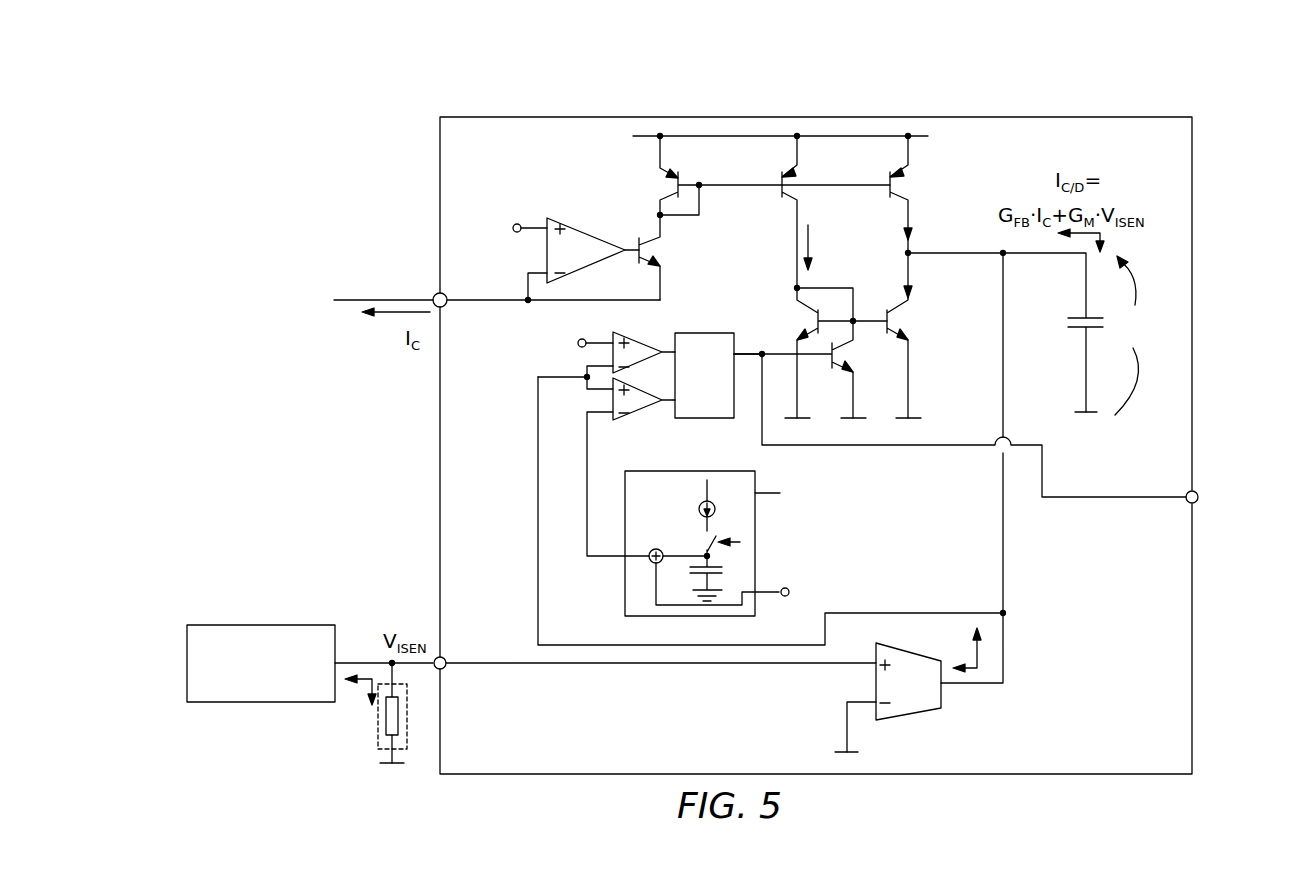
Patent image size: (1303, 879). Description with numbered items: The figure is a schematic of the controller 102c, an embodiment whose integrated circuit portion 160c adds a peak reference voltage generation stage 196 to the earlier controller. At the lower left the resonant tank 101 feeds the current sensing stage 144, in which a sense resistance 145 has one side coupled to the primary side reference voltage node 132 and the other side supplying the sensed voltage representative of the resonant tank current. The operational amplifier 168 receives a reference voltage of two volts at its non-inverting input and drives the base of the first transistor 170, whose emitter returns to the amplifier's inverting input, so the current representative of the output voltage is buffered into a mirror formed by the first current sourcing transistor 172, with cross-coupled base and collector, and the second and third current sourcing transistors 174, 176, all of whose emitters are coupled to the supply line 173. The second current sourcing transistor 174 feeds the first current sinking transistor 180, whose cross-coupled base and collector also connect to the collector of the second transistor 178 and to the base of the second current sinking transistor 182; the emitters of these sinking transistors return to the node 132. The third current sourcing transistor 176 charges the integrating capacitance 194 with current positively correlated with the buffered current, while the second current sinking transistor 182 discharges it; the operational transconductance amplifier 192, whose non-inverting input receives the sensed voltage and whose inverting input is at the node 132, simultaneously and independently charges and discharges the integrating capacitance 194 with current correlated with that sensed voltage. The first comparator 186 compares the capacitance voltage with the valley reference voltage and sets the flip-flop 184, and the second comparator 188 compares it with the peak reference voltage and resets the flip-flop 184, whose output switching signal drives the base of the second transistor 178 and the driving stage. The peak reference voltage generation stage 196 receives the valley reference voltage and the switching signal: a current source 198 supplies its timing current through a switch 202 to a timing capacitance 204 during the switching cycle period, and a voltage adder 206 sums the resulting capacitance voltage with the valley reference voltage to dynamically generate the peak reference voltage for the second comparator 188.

The resonant tank 101 is at (262, 625).
The controller 102c is at (1203, 93).
The primary side reference voltage node 132 is at (842, 436).
The current sensing stage 144 is at (382, 732).
The sense resistance 145 is at (399, 719).
The integrated circuit portion 160c is at (715, 117).
The operational amplifier 168 is at (562, 218).
The first transistor 170 is at (632, 256).
The first current sourcing transistor 172 is at (681, 176).
The supply line 173 is at (926, 138).
The second current sourcing transistor 174 is at (779, 194).
The third current sourcing transistor 176 is at (886, 178).
The second transistor 178 is at (830, 360).
The first current sinking transistor 180 is at (816, 319).
The second current sinking transistor 182 is at (887, 318).
The flip-flop 184 is at (703, 333).
The first comparator 186 is at (633, 338).
The second comparator 188 is at (640, 388).
The operational transconductance amplifier 192 is at (905, 716).
The integrating capacitance 194 is at (1098, 329).
The peak reference voltage generation stage 196 is at (700, 471).
The current source 198 is at (713, 505).
The switch 202 is at (697, 538).
The timing capacitance 204 is at (700, 571).
The voltage adder 206 is at (651, 563).